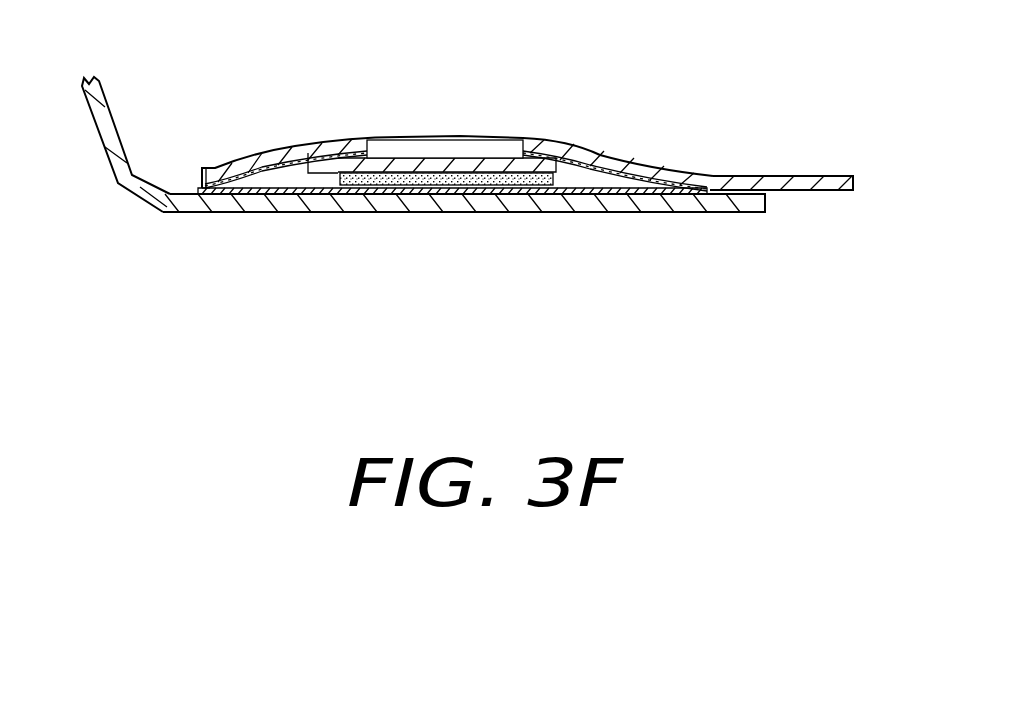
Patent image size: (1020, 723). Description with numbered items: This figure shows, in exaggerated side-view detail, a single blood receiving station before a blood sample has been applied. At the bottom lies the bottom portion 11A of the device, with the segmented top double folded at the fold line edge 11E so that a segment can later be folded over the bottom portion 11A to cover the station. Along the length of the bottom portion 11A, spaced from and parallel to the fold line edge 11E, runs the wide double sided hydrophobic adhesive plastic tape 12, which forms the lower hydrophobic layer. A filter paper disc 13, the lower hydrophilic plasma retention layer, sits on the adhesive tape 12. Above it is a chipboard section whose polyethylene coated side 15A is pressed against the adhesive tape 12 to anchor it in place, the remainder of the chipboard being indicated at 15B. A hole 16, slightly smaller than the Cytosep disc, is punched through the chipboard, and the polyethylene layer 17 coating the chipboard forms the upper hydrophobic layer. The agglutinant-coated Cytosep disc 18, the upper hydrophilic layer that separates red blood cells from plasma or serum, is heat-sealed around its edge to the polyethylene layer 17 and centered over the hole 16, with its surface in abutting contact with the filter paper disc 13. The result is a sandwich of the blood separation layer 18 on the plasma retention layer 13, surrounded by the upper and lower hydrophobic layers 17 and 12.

The bottom portion 11A is at (500, 228).
The fold line edge 11E is at (150, 207).
The double sided hydrophobic adhesive plastic tape 12 is at (565, 212).
The filter paper disc 13 is at (407, 205).
The polyethylene coated side of chipboard 15A is at (814, 206).
The curved portion of cover sheet 15B is at (692, 166).
The hole 16 is at (387, 125).
The polyethylene layer 17 is at (284, 180).
The Cytosep disc 18 is at (464, 145).